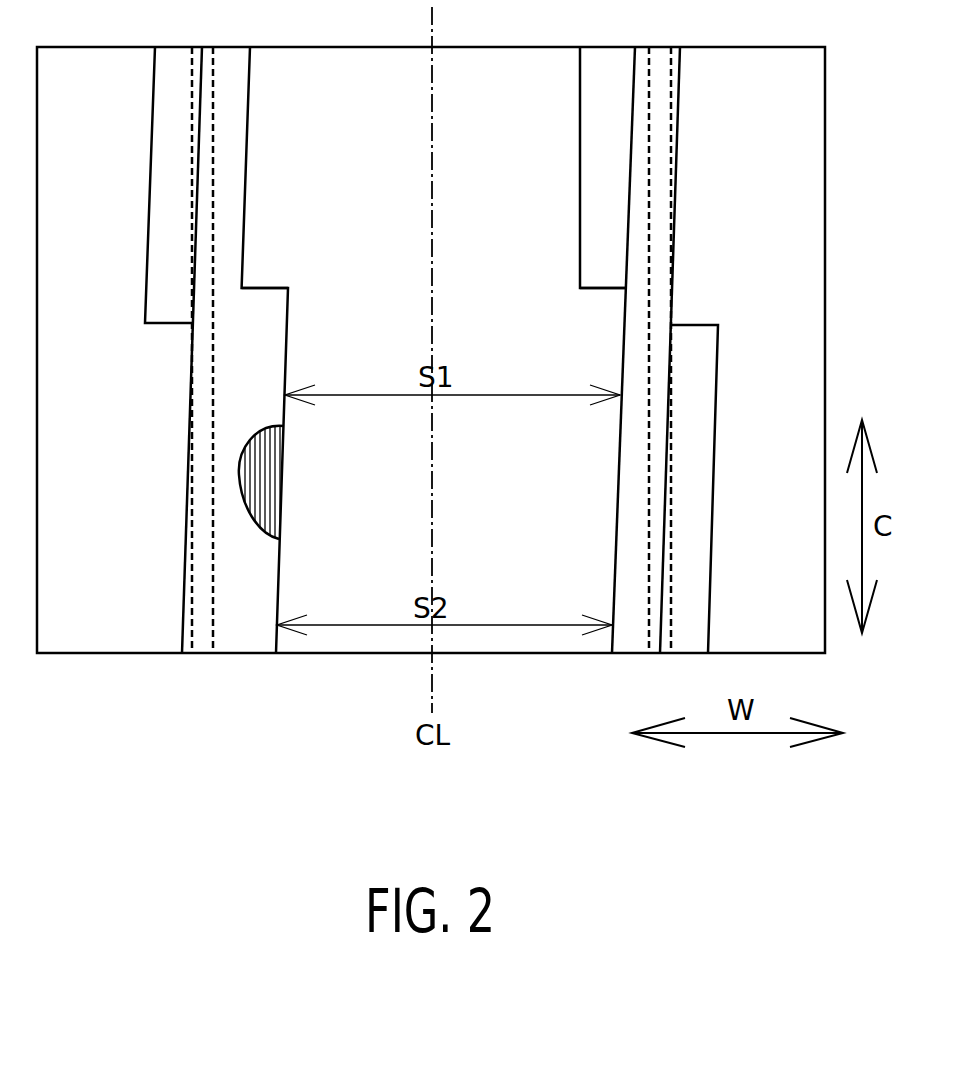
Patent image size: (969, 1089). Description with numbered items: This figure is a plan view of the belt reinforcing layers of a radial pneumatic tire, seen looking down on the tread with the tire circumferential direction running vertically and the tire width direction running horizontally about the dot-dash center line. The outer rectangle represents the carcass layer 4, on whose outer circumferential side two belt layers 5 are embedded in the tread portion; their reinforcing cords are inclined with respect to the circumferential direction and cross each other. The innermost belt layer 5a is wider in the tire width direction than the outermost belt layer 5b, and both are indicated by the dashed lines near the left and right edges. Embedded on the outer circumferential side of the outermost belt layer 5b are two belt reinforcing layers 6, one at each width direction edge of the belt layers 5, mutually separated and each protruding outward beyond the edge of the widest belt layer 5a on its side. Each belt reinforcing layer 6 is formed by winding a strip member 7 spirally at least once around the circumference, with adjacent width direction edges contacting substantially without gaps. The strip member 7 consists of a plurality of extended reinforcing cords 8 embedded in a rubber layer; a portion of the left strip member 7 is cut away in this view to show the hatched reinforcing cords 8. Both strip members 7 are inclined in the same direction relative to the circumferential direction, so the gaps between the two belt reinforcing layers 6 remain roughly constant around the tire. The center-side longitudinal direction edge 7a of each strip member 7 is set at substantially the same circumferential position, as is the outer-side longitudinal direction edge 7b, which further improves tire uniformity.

The carcass layer 4 is at (128, 630).
The belt layers 5 is at (414, 439).
The innermost belt layer 5a is at (221, 644).
The outermost belt layer 5b is at (197, 644).
The belt reinforcing layer 6 is at (320, 337).
The strip member 7 is at (438, 350).
The longitudinal direction edge 7a is at (268, 288).
The longitudinal direction edge 7b is at (162, 323).
The reinforcing cords 8 is at (255, 462).